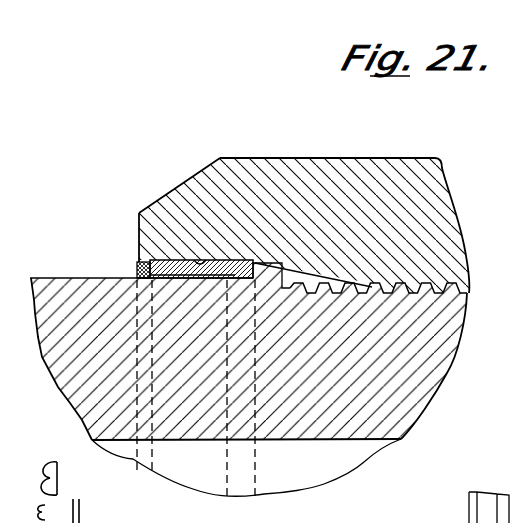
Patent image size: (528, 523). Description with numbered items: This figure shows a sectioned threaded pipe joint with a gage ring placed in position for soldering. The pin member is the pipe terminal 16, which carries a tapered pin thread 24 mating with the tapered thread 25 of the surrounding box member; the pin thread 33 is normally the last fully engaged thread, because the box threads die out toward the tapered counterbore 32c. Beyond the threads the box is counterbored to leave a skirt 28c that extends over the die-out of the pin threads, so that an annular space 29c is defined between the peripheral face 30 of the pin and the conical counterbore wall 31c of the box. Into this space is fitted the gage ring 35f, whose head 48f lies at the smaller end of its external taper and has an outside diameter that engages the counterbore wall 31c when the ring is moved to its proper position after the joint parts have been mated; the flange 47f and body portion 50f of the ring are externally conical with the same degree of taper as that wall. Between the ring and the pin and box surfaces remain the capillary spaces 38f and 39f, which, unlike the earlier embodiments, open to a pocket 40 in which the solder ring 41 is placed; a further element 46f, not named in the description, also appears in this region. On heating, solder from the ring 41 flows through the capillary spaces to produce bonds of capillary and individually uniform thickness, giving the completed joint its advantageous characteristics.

The pipe terminal 16 is at (355, 425).
The tapered thread 24 is at (453, 297).
The tapered thread 25 is at (440, 290).
The clamping block 28c is at (198, 193).
The annular space 29c is at (138, 258).
The peripheral face 30 is at (100, 278).
The counterbore wall 31c is at (224, 258).
The inclined bottom surface 32c is at (322, 283).
The pin thread 33 is at (424, 294).
The gage ring 35f is at (139, 218).
The capillary space 38f is at (186, 259).
The capillary space 39f is at (170, 281).
The pocket 40 is at (138, 258).
The solder ring 41 is at (140, 267).
The hidden slot edge 46f is at (238, 280).
The insert end 47f is at (248, 260).
The ring head 48f is at (272, 263).
The notch 50f is at (197, 259).